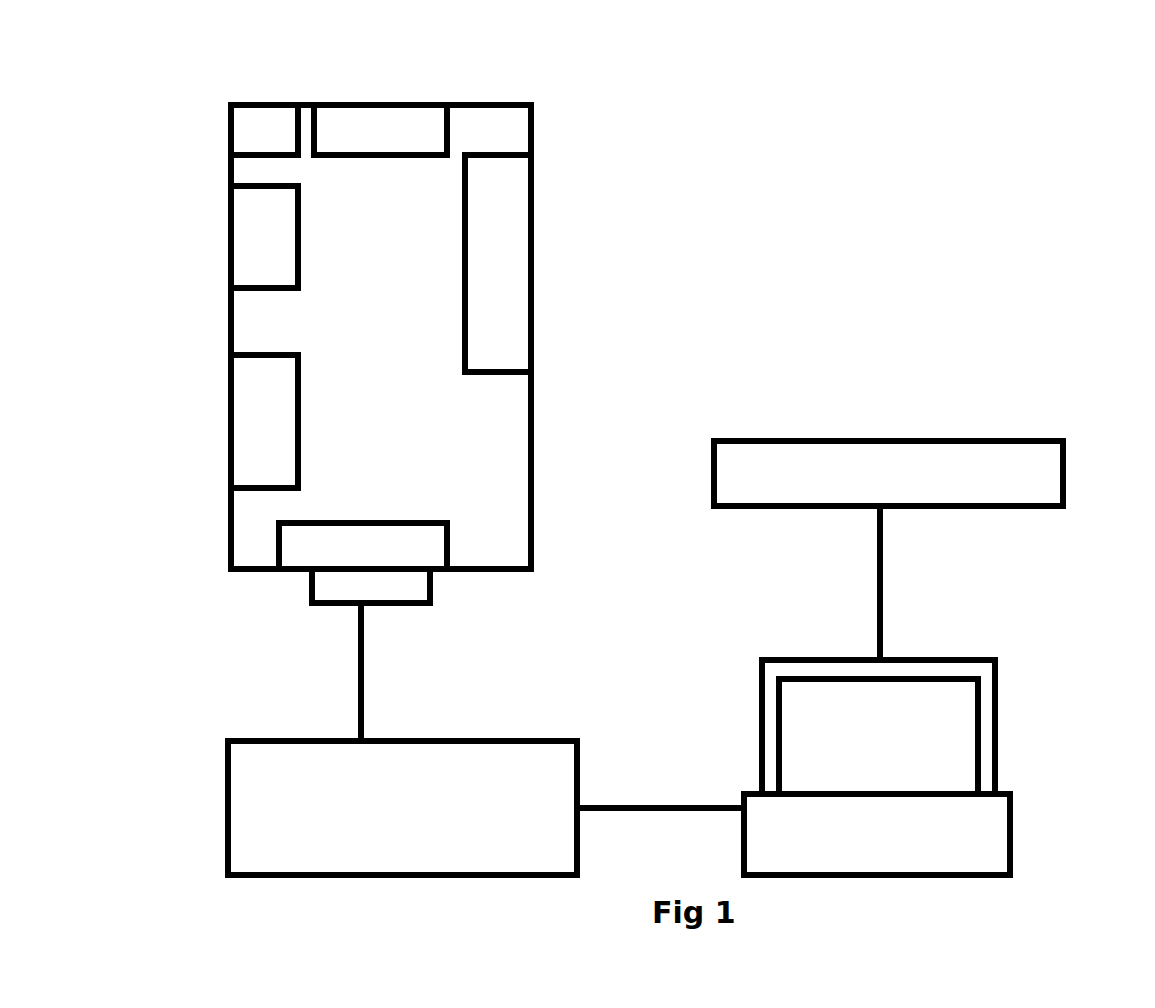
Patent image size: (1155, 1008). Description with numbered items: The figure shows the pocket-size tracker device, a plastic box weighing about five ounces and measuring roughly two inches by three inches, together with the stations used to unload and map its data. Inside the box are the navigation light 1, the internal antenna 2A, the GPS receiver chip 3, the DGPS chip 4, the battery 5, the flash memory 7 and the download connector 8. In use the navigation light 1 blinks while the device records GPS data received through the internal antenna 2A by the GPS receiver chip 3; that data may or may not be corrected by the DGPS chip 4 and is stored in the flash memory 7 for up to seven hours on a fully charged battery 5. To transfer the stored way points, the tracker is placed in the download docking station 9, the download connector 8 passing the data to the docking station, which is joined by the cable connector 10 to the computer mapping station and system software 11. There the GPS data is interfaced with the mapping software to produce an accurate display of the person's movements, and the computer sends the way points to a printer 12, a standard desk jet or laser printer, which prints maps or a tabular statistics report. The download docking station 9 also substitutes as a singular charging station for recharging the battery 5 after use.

The navigation light 1 is at (265, 118).
The internal antenna 2A is at (382, 120).
The GPS receiver chip 3 is at (245, 420).
The DGPS chip 4 is at (245, 253).
The battery 5 is at (515, 205).
The flash memory 7 is at (428, 539).
The download connector 8 is at (432, 607).
The download docking station 9 is at (228, 807).
The cable connector 10 is at (660, 808).
The computer mapping station and system software 11 is at (995, 728).
The printer 12 is at (1063, 458).